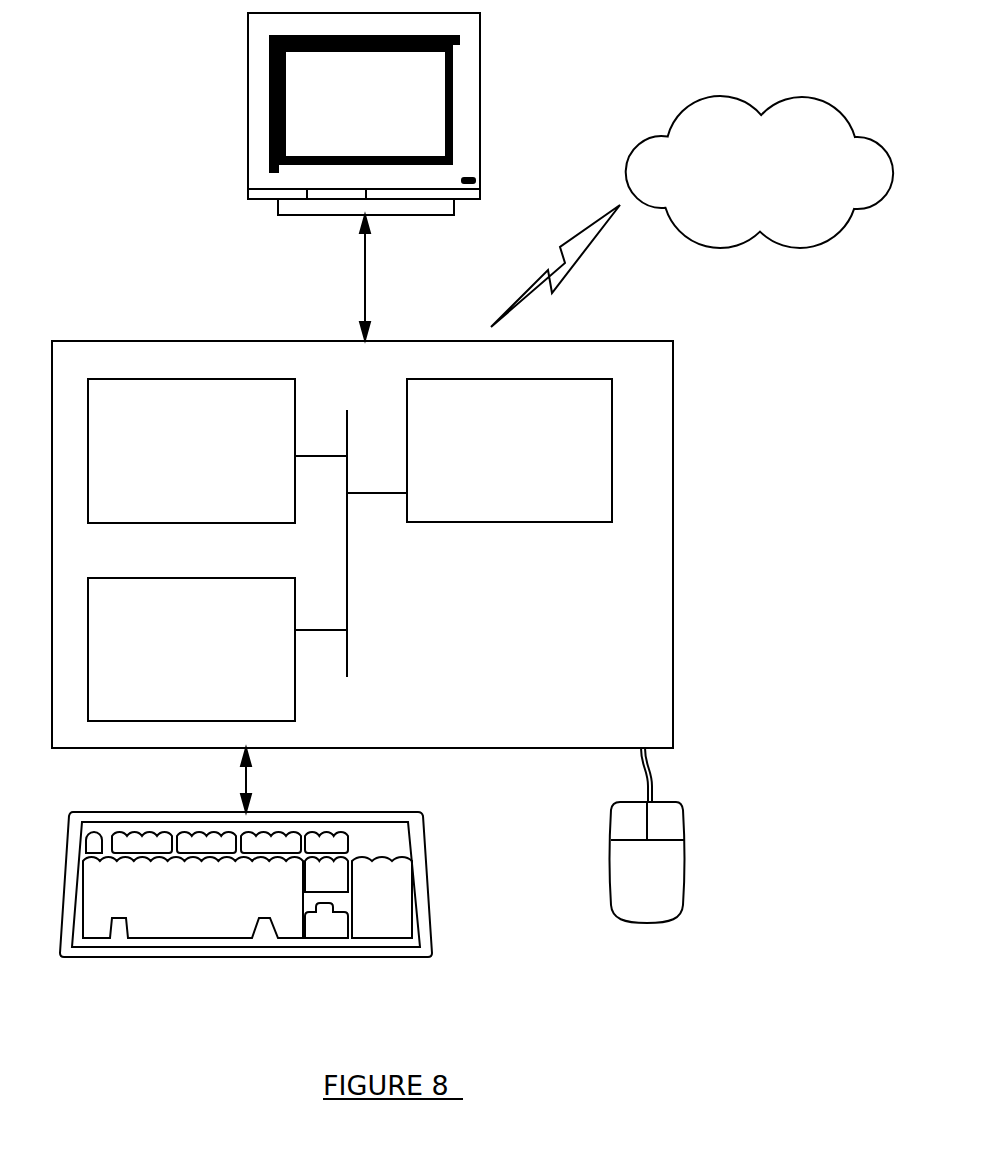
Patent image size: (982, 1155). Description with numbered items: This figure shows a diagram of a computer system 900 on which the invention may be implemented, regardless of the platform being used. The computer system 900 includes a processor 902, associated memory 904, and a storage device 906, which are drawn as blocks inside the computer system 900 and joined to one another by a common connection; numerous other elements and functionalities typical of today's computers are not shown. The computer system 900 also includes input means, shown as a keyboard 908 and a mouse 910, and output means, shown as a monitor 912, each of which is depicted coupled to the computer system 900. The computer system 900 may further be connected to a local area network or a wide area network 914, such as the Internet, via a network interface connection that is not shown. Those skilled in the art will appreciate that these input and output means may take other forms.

The computer system 900 is at (697, 590).
The processor 902 is at (490, 461).
The associated memory 904 is at (172, 461).
The storage device 906 is at (168, 660).
The keyboard 908 is at (173, 912).
The mouse 910 is at (627, 880).
The monitor 912 is at (345, 118).
The wide area network 914 is at (752, 193).